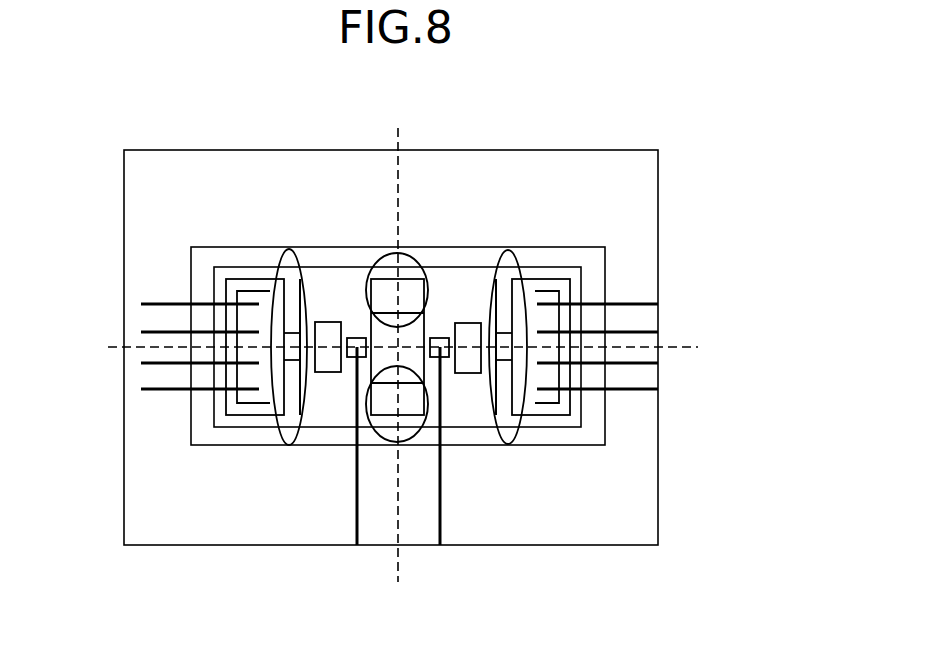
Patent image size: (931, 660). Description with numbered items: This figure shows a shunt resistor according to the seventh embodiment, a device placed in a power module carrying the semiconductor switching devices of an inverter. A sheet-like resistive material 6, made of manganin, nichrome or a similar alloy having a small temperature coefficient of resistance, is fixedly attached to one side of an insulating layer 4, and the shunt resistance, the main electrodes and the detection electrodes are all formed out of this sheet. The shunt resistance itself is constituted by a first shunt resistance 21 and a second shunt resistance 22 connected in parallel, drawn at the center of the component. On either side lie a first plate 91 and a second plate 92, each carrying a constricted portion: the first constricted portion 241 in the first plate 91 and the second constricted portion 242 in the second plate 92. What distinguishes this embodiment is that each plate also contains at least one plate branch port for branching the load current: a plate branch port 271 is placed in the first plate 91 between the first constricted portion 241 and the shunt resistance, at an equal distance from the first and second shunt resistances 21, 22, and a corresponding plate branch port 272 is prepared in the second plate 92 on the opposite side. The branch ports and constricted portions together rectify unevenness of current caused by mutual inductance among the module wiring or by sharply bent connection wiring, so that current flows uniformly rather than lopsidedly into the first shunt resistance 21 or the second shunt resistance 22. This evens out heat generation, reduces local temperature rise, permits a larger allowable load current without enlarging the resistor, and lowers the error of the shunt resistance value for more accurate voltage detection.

The insulating layer 4 is at (191, 254).
The sheet-like resistive material 6 is at (214, 292).
The first shunt resistance 21 is at (391, 253).
The second shunt resistance 22 is at (379, 433).
The first constricted portion 241 is at (289, 250).
The second constricted portion 242 is at (507, 250).
The plate branch port 271 is at (329, 332).
The plate branch port 272 is at (468, 330).
The first plate 91 is at (327, 385).
The second plate 92 is at (473, 385).